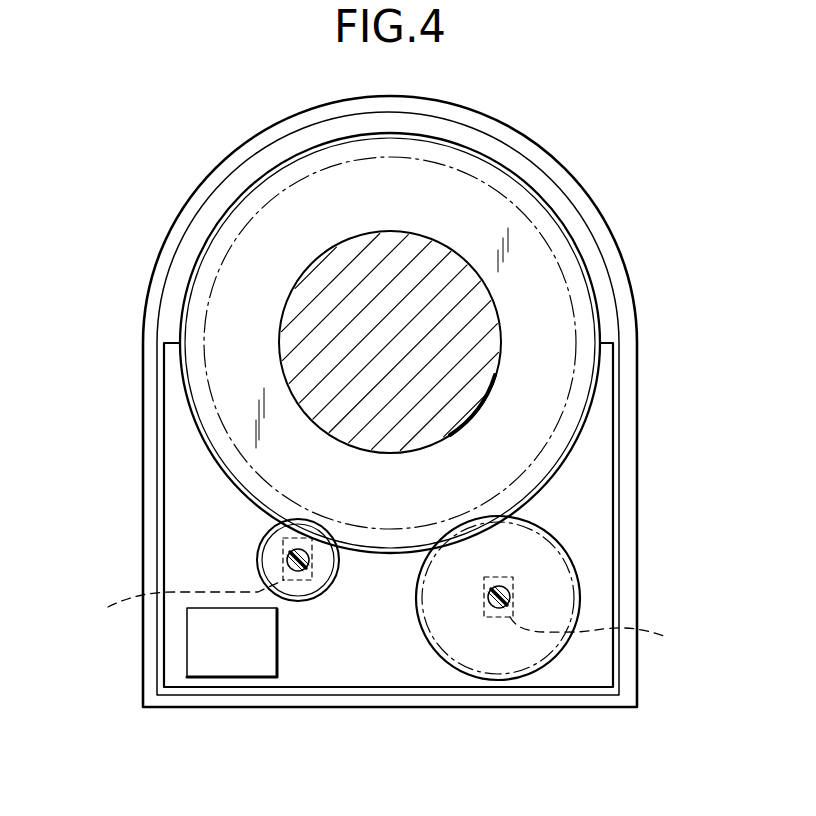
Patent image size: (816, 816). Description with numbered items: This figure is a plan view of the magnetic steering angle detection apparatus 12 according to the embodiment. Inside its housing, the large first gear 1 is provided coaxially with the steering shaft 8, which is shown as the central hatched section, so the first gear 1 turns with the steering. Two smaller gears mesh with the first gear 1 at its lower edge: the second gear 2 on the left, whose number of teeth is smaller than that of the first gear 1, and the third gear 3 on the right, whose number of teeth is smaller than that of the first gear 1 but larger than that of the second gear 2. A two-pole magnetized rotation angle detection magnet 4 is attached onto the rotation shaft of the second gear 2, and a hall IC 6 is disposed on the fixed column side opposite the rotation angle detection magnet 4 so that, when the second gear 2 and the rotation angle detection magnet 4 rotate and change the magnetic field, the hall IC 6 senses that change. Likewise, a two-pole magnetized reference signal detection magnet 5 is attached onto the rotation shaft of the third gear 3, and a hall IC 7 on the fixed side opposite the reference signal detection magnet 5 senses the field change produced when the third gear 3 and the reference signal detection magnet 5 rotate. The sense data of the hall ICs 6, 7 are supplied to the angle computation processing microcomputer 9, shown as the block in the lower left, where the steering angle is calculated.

The steering angle detection apparatus 12 is at (582, 126).
The first gear 1 is at (556, 256).
The steering shaft 8 is at (296, 314).
The second gear 2 is at (272, 537).
The rotation angle detection magnet 4 is at (285, 552).
The hall IC 6 is at (185, 601).
The third gear 3 is at (545, 560).
The reference signal detection magnet 5 is at (508, 588).
The hall IC 7 is at (606, 637).
The angle computation processing microcomputer 9 is at (230, 660).